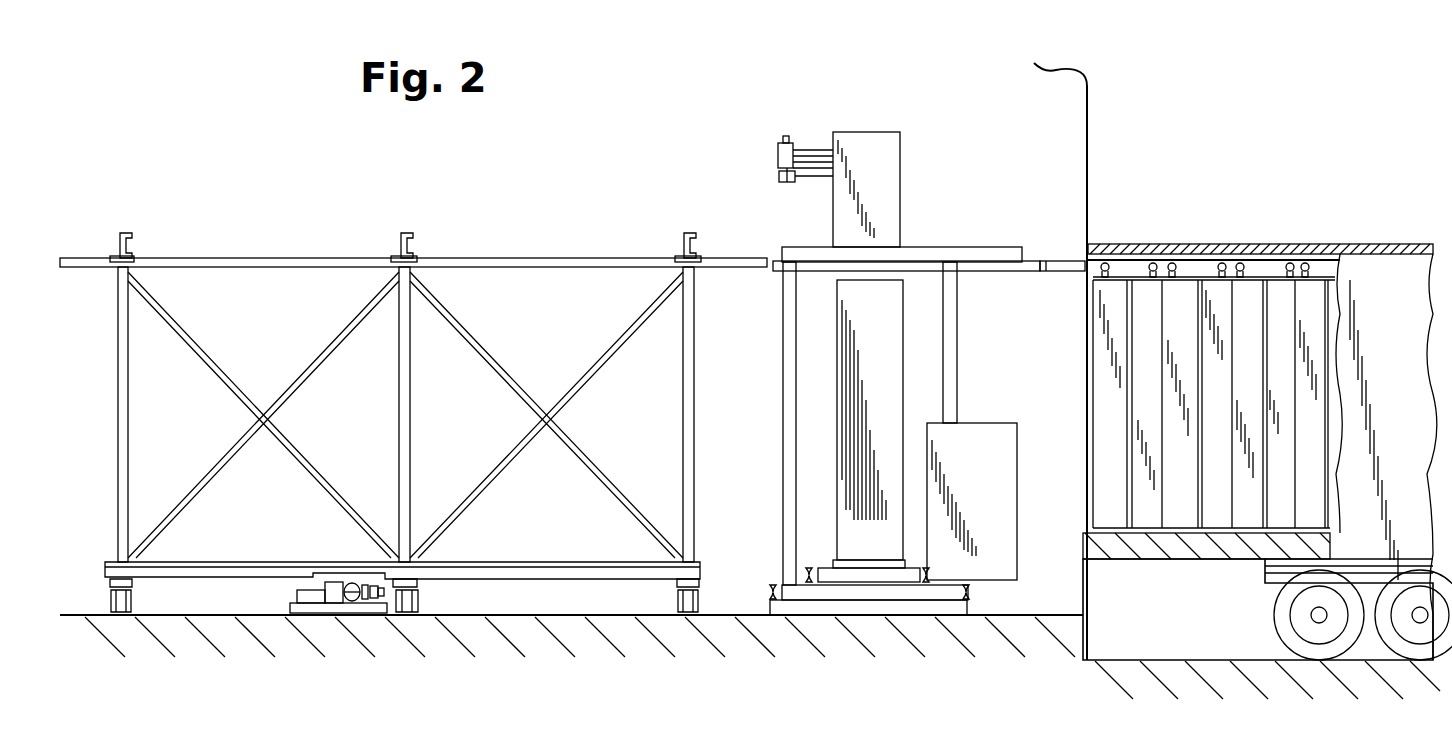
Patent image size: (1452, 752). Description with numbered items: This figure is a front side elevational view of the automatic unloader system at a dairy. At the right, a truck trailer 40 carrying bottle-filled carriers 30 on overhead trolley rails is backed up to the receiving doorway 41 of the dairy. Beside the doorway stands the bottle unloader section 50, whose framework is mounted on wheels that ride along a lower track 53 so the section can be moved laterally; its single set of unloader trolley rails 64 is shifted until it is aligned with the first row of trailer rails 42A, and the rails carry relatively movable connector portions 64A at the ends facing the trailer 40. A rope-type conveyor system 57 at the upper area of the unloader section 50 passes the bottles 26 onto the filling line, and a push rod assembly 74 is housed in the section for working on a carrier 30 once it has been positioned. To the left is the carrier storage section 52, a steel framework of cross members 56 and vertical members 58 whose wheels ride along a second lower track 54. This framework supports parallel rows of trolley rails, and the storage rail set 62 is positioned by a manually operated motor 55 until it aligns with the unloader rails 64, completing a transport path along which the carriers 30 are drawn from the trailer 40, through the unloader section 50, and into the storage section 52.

The bottles 26 is at (790, 149).
The carriers 30 is at (1212, 280).
The truck trailer 40 is at (1284, 246).
The receiving doorway 41 is at (1087, 172).
The first row of trailer rails 42A is at (1136, 262).
The bottle unloader section 50 is at (920, 240).
The carrier storage section 52 is at (490, 254).
The lower track 53 is at (770, 610).
The lower track 54 is at (417, 588).
The motor 55 is at (335, 584).
The cross members 56 is at (503, 378).
The rope-type conveyor system 57 is at (772, 178).
The vertical members 58 is at (696, 368).
The storage rail set 62 is at (598, 261).
The unloader trolley rails 64 is at (1002, 270).
The connector portions 64A is at (1057, 266).
The push rod assembly 74 is at (900, 370).